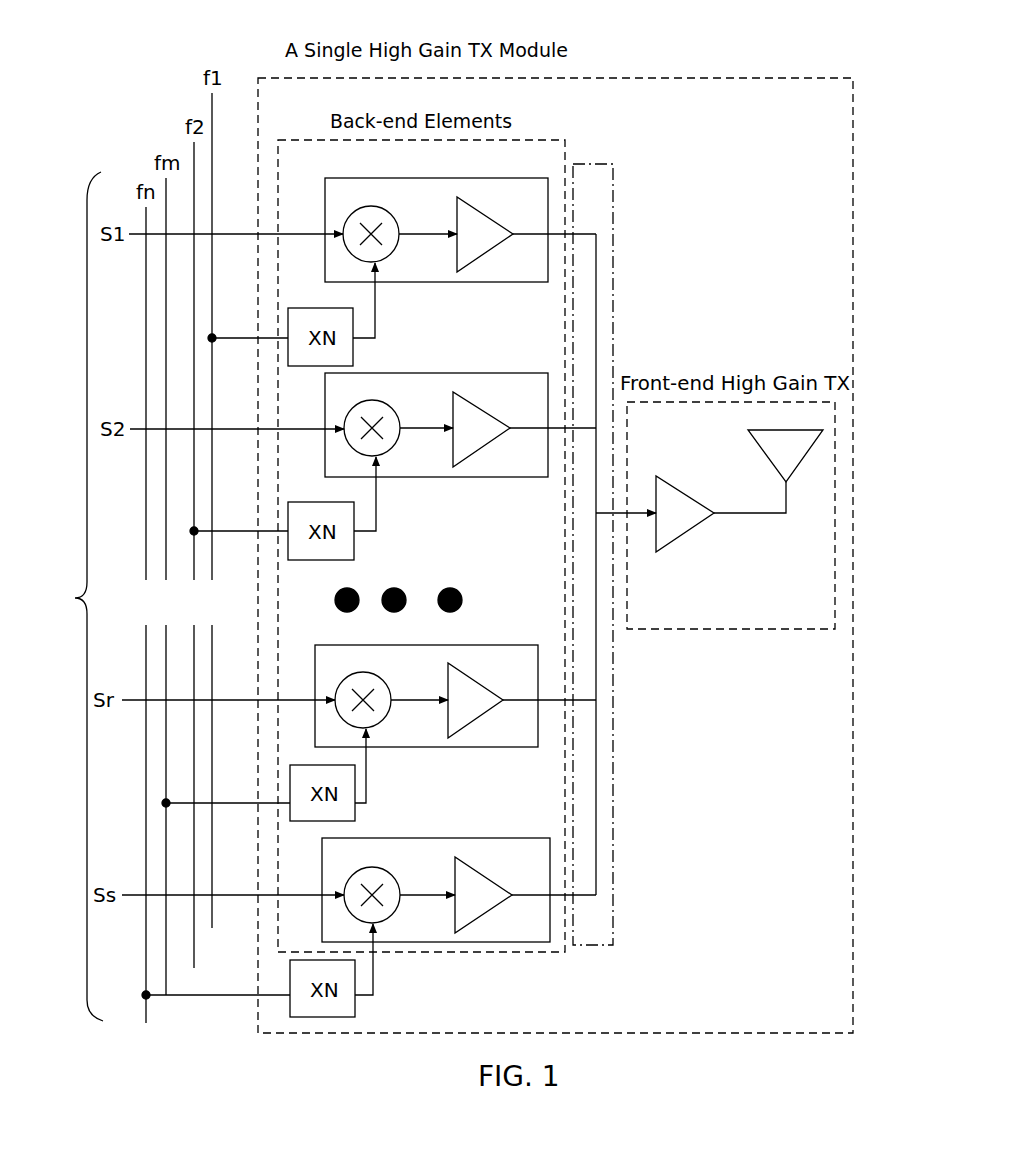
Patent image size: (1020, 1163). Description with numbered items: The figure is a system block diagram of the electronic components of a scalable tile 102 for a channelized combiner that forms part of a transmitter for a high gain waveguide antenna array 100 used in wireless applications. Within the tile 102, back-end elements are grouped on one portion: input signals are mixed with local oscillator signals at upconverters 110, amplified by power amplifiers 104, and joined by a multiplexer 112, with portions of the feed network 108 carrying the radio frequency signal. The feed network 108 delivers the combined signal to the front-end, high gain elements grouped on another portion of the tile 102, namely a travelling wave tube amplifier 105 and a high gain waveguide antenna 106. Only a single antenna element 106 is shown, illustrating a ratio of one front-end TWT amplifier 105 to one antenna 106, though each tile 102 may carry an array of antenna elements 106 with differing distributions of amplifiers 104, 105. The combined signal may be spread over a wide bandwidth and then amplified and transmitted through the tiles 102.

The high gain waveguide antenna array 100 is at (555, 546).
The scalable tile 102 is at (753, 1034).
The power amplifier 104 is at (509, 225).
The travelling wave tube (TWT) amplifier 105 is at (687, 533).
The high gain waveguide antenna 106 is at (755, 440).
The feed network 108 is at (635, 858).
The upconverter 110 is at (398, 246).
The multiplexer 112 is at (618, 247).